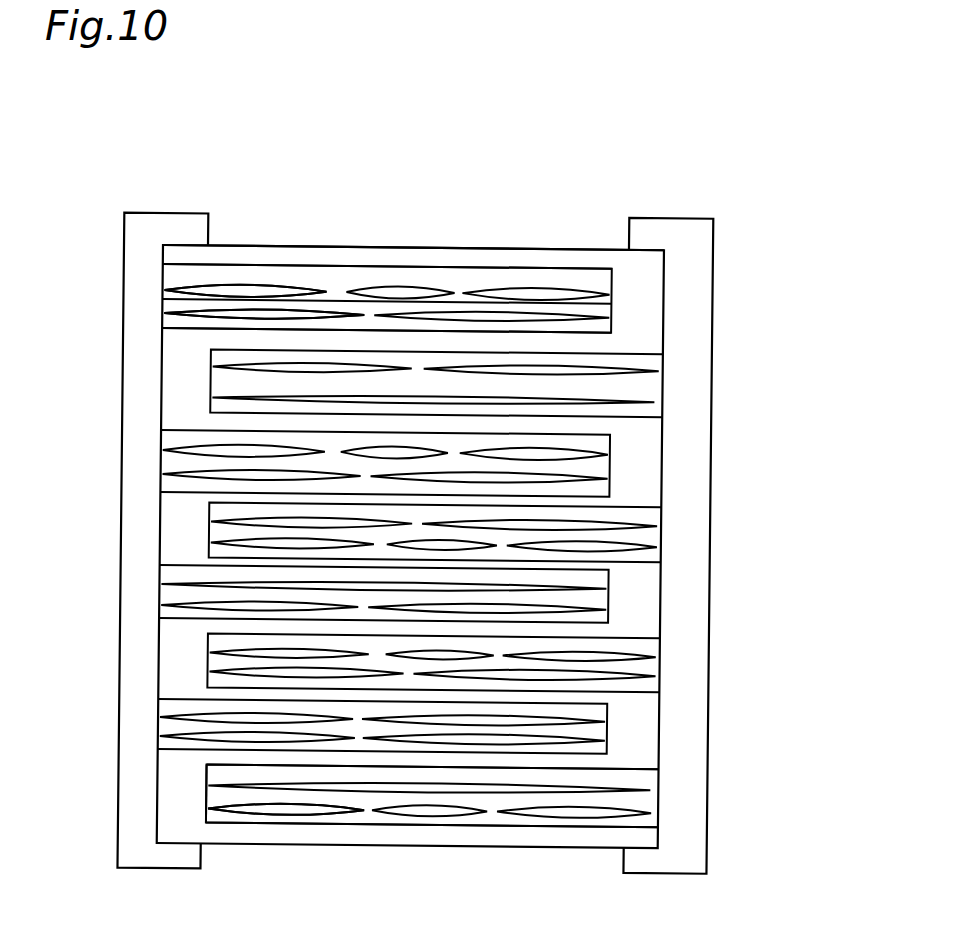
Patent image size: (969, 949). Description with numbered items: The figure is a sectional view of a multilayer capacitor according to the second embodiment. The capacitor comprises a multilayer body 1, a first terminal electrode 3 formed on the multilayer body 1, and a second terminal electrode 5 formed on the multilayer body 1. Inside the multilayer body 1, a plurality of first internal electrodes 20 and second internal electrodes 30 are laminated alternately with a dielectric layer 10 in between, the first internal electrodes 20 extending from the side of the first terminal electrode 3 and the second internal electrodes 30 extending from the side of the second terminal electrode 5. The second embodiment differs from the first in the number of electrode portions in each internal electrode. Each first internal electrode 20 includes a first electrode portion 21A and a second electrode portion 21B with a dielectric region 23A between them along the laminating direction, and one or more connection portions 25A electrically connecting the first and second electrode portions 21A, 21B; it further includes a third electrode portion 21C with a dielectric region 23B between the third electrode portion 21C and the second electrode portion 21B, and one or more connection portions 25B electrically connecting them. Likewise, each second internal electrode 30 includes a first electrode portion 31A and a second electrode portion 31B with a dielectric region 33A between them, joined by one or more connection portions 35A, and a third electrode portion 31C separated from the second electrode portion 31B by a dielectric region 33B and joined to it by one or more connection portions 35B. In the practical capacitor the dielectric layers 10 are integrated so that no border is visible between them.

The multilayer body 1 is at (577, 246).
The first terminal electrode 3 is at (190, 213).
The second terminal electrode 5 is at (688, 219).
The dielectric layer 10 is at (640, 264).
The first internal electrode 20 is at (415, 320).
The first electrode portion 21A is at (177, 275).
The second electrode portion 21B is at (168, 308).
The third electrode portion 21C is at (178, 328).
The dielectric region 23A is at (545, 283).
The dielectric region 23B is at (178, 297).
The connection portion 25A is at (167, 297).
The connection portion 25B is at (410, 364).
The second internal electrode 30 is at (415, 796).
The first electrode portion 31A is at (645, 781).
The second electrode portion 31B is at (648, 806).
The third electrode portion 31C is at (648, 825).
The dielectric region 33A is at (210, 790).
The dielectric region 33B is at (592, 817).
The connection portion 35A is at (212, 781).
The connection portion 35B is at (212, 807).